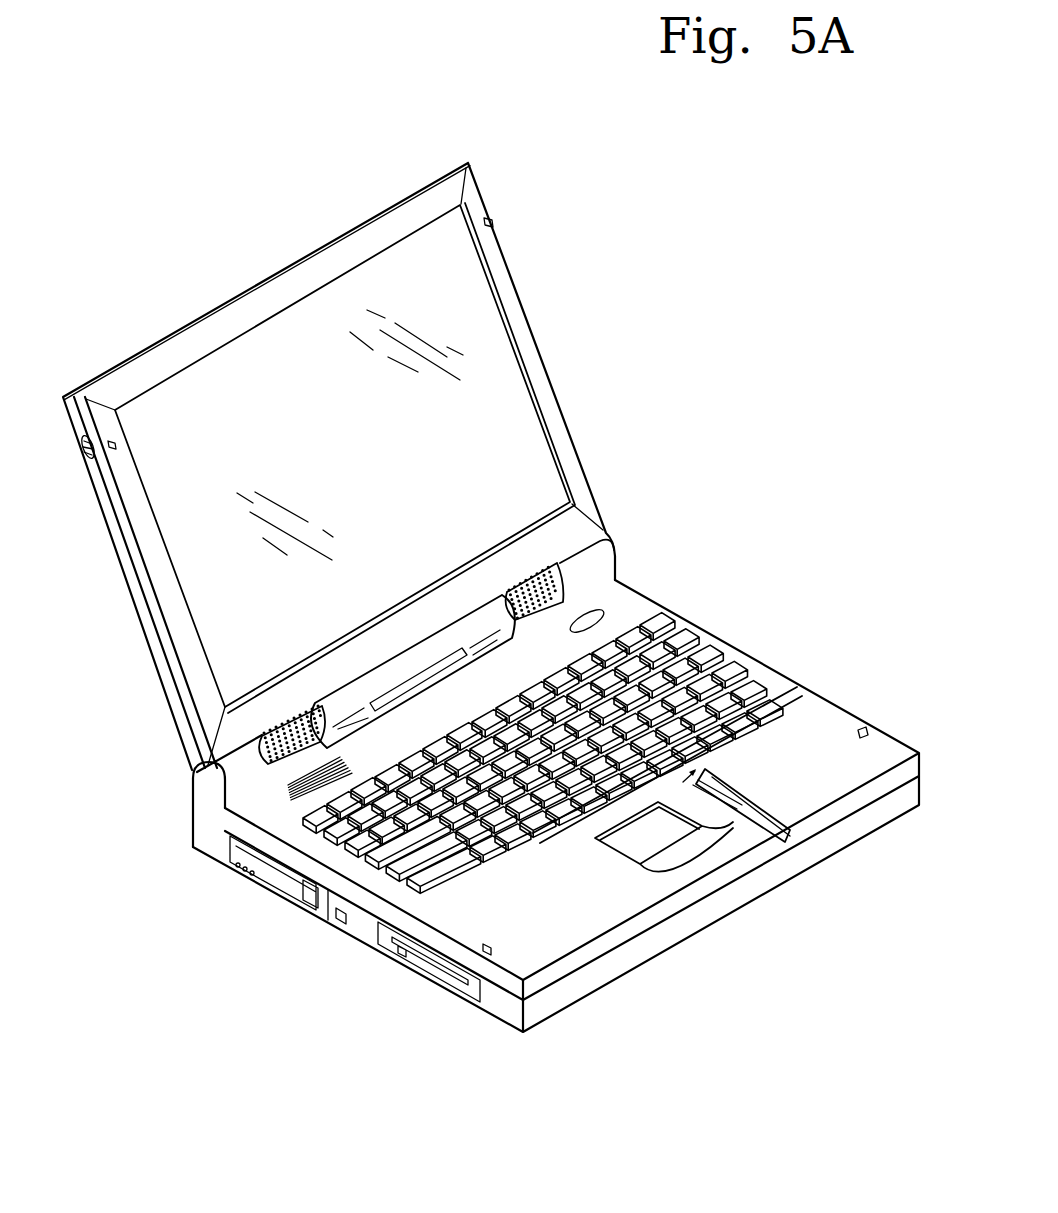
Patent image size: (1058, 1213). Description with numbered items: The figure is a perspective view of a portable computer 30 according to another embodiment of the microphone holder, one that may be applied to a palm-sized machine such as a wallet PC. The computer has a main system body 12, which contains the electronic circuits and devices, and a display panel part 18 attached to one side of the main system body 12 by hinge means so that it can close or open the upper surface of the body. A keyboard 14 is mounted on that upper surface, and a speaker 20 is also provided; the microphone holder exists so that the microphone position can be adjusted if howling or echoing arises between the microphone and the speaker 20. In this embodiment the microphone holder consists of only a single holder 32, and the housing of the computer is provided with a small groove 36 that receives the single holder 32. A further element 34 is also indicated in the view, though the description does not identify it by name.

The main system body 12 is at (573, 927).
The keyboard 14 is at (713, 665).
The display panel part 18 is at (282, 292).
The speaker 20 is at (538, 580).
The portable computer 30 is at (776, 281).
The single holder 32 is at (777, 815).
The cover edge 34 is at (712, 763).
The small groove 36 is at (728, 806).